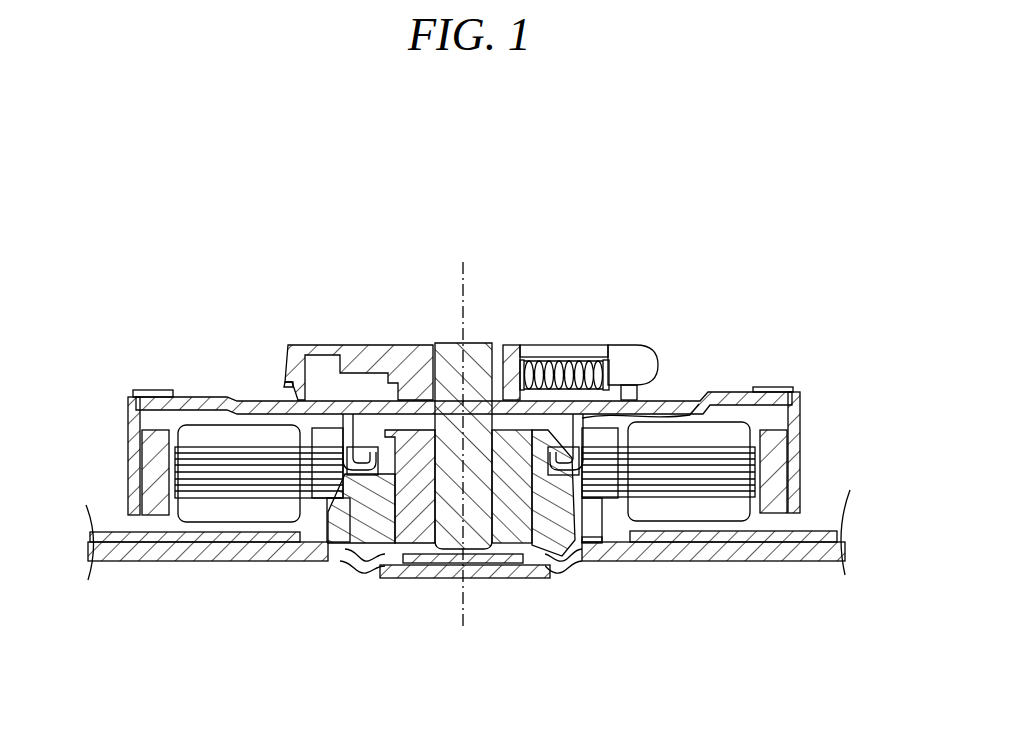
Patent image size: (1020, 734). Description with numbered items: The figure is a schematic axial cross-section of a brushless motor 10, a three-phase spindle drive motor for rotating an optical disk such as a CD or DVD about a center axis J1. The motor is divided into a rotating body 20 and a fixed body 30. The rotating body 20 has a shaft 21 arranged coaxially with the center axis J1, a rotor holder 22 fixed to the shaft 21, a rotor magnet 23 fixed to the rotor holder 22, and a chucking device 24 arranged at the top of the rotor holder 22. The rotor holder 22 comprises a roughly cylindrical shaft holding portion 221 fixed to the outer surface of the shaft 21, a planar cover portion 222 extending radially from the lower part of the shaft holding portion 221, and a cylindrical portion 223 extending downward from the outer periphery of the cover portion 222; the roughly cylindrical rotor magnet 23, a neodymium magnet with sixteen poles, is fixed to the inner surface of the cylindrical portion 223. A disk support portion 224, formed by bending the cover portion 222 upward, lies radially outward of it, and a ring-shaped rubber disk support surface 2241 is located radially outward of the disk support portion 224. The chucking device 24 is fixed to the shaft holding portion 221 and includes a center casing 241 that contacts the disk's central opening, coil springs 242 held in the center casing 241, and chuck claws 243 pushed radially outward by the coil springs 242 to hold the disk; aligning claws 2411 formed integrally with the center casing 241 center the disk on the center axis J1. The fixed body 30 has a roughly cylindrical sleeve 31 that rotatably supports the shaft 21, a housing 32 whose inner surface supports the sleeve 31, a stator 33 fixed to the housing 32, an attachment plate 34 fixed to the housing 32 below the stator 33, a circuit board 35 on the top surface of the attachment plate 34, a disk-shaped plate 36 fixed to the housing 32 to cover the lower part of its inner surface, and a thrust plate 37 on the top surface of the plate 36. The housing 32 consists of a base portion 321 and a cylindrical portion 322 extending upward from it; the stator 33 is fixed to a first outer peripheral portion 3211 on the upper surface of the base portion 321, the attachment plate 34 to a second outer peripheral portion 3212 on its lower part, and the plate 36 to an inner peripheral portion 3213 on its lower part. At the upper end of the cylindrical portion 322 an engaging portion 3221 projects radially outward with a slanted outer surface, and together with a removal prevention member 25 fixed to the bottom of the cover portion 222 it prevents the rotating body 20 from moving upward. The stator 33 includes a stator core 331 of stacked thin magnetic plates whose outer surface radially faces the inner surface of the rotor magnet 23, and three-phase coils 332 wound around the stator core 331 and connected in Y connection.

The brushless motor 10 is at (92, 260).
The rotating body 20 is at (691, 313).
The shaft 21 is at (440, 345).
The rotor holder 22 is at (481, 353).
The shaft holding portion 221 is at (425, 347).
The cover portion 222 is at (252, 400).
The cylindrical portion 223 is at (802, 463).
The disk support portion 224 is at (765, 375).
The disk support surface 2241 is at (150, 390).
The rotor magnet 23 is at (778, 518).
The chucking device 24 is at (421, 296).
The center casing 241 is at (358, 345).
The aligning claws 2411 is at (284, 382).
The coil springs 242 is at (560, 357).
The chuck claws 243 is at (628, 345).
The removal prevention member 25 is at (380, 398).
The fixed body 30 is at (485, 536).
The sleeve 31 is at (524, 560).
The housing 32 is at (495, 536).
The base portion 321 is at (356, 563).
The first outer peripheral portion 3211 is at (600, 550).
The second outer peripheral portion 3212 is at (572, 565).
The inner peripheral portion 3213 is at (366, 575).
The cylindrical portion 322 is at (565, 570).
The engaging portion 3221 is at (684, 412).
The stator 33 is at (403, 466).
The stator core 331 is at (212, 460).
The coils 332 is at (200, 510).
The attachment plate 34 is at (176, 560).
The circuit board 35 is at (213, 542).
The plate 36 is at (446, 578).
The thrust plate 37 is at (516, 575).
The center axis J1 is at (470, 282).